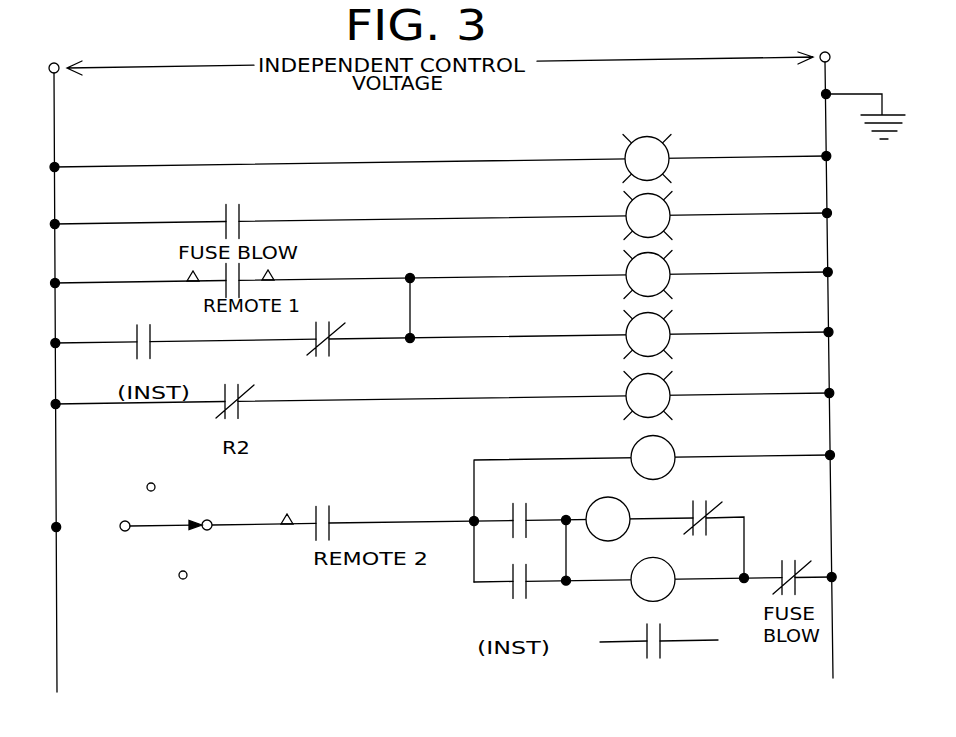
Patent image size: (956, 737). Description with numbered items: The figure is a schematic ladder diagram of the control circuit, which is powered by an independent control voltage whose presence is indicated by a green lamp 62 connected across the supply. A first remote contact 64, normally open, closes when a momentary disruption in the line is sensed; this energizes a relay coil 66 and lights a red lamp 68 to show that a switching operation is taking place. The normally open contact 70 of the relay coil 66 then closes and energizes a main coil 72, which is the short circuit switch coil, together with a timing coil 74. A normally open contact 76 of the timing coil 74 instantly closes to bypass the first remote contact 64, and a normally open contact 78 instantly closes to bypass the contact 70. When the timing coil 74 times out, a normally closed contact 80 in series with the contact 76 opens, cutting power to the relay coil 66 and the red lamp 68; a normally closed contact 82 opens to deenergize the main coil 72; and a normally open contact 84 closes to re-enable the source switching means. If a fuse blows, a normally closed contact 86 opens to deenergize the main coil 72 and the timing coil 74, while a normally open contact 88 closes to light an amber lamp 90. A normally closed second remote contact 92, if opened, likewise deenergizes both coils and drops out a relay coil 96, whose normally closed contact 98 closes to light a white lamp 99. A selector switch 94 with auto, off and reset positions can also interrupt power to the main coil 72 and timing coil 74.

The green lamp 62 is at (662, 143).
The amber lamp 90 is at (664, 203).
The red lamp 68 is at (664, 262).
The relay coil 66 is at (664, 322).
The white lamp 99 is at (664, 385).
The relay coil 96 is at (669, 449).
The main coil 72 is at (625, 508).
The timing coil 74 is at (669, 593).
The normally open contact 88 is at (241, 208).
The first remote contact 64 is at (243, 279).
The normally open contact 76 is at (151, 345).
The normally closed contact 80 is at (331, 345).
The normally closed contact 98 is at (239, 407).
The second remote contact 92 is at (324, 507).
The normally open contact 70 is at (520, 505).
The normally open contact 78 is at (511, 595).
The normally closed contact 82 is at (703, 505).
The normally closed contact 86 is at (791, 562).
The normally open contact 84 is at (661, 648).
The selector switch 94 is at (160, 529).